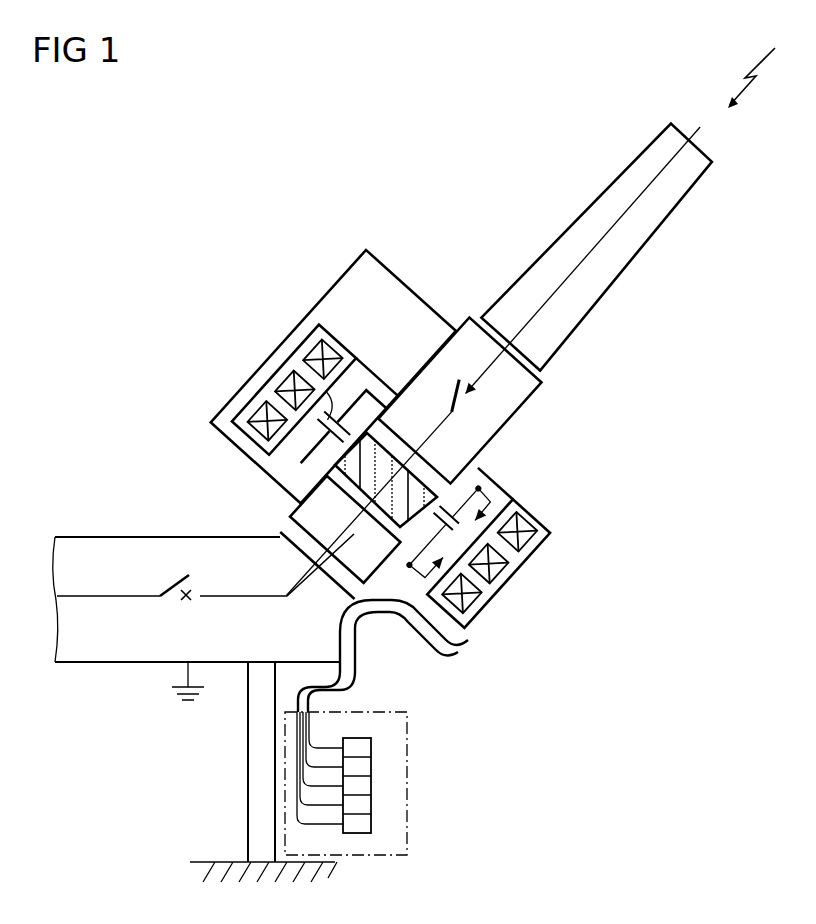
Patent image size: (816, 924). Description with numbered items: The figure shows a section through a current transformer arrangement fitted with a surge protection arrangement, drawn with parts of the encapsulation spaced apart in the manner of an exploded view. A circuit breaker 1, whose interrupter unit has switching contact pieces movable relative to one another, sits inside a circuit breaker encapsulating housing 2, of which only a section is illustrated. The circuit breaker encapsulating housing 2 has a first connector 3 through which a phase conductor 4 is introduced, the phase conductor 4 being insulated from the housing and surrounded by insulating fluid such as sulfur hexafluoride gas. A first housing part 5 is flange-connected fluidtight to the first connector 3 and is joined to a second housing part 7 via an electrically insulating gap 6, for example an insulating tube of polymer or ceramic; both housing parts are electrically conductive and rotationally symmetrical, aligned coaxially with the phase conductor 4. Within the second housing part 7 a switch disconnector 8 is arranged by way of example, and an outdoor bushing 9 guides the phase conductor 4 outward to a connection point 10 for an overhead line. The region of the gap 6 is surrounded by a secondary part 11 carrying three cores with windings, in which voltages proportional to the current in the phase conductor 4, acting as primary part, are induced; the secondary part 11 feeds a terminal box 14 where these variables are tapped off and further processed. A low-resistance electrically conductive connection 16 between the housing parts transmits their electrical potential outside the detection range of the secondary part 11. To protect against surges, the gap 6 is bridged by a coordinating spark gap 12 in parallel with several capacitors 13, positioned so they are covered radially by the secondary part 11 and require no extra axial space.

The circuit breaker 1 is at (174, 576).
The circuit breaker encapsulating housing 2 is at (122, 537).
The first connector 3 is at (280, 532).
The phase conductor 4 is at (297, 582).
The first housing part 5 is at (384, 596).
The electrically insulating gap 6 is at (300, 503).
The second housing part 7 is at (513, 417).
The switch disconnector 8 is at (448, 393).
The outdoor bushing 9 is at (575, 224).
The connection point 10 is at (707, 123).
The secondary part 11 is at (532, 545).
The coordinating spark gap 12 is at (441, 585).
The capacitors 13 is at (294, 360).
The terminal box 14 is at (407, 760).
The low-resistance electrically conductive connection 16 is at (400, 278).